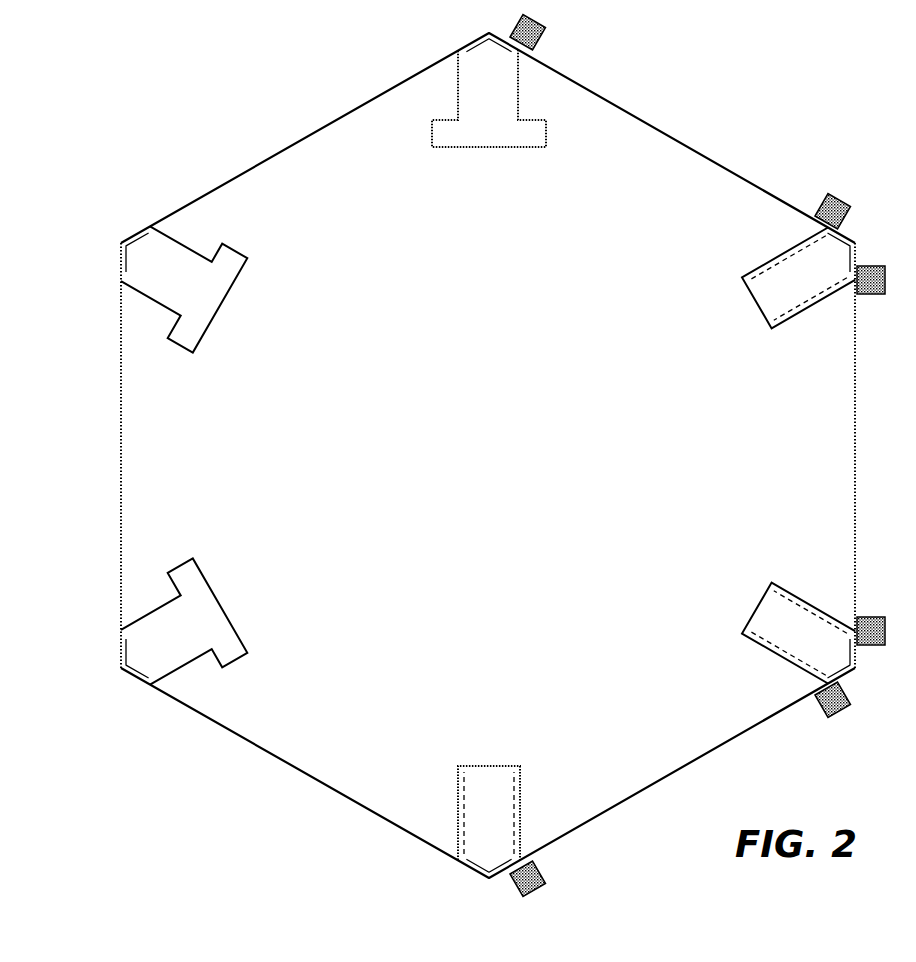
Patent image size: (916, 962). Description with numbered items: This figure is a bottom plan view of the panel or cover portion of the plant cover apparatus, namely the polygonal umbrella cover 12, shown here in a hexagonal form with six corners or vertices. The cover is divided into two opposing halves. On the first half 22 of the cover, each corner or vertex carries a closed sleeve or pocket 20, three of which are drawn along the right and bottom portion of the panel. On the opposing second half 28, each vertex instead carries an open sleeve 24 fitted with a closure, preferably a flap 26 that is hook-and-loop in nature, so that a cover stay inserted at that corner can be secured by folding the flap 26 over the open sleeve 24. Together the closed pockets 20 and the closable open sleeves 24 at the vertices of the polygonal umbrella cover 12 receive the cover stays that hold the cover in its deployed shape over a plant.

The polygonal umbrella cover 12 is at (673, 152).
The closed sleeves or pockets 20 is at (837, 252).
The first half 22 is at (845, 402).
The open sleeves 24 is at (475, 66).
The flaps 26 is at (537, 134).
The second half 28 is at (132, 398).